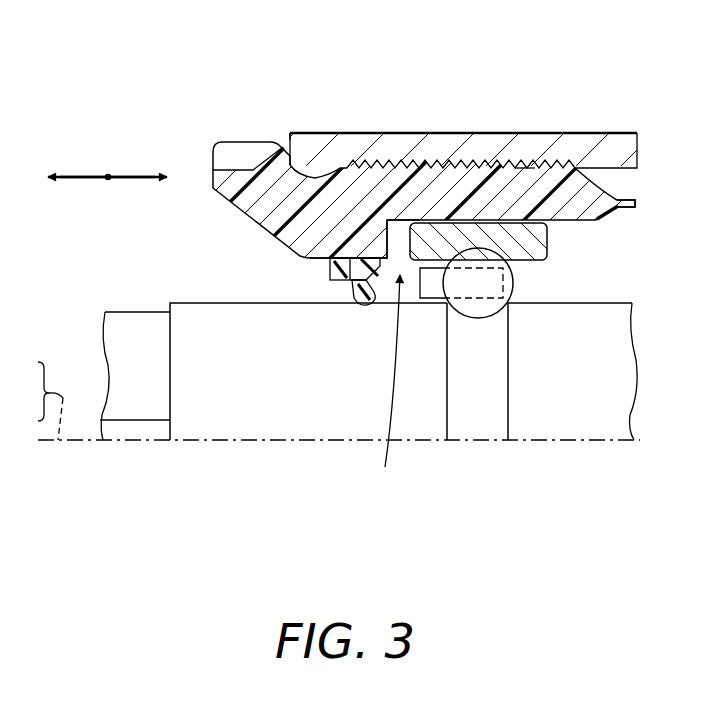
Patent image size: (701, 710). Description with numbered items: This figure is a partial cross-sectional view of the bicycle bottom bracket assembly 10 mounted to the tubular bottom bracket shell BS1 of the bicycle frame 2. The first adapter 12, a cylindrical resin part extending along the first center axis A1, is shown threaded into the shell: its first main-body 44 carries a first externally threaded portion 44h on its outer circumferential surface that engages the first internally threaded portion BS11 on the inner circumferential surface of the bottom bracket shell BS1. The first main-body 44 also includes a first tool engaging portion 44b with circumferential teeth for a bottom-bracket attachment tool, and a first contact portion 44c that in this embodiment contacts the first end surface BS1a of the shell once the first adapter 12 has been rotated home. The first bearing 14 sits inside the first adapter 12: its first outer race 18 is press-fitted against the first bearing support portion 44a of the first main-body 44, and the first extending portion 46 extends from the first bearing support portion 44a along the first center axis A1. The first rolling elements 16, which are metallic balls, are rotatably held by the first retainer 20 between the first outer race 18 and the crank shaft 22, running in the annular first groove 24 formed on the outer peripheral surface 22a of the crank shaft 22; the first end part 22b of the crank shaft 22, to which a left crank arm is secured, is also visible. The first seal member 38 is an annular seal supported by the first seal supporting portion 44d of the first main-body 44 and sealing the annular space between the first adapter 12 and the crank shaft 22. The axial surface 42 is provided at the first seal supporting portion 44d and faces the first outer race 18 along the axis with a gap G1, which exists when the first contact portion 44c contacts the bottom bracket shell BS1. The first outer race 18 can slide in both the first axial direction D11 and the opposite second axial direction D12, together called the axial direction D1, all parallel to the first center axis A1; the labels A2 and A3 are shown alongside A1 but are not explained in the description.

The bicycle bottom bracket assembly 10 is at (193, 119).
The first adapter 12 is at (622, 95).
The bicycle frame 2 is at (320, 124).
The first main-body 44 is at (588, 179).
The first bearing support portion 44a is at (430, 137).
The first tool engaging portion 44b is at (248, 140).
The first contact portion 44c is at (275, 138).
The first seal supporting portion 44d is at (320, 240).
The first externally threaded portion 44h is at (495, 150).
The first extending portion 46 is at (620, 200).
The axial surface 42 is at (407, 218).
The first seal member 38 is at (310, 278).
The first bearing 14 is at (641, 222).
The first outer race 18 is at (556, 240).
The first rolling elements 16 is at (507, 282).
The first retainer 20 is at (433, 293).
The crank shaft 22 is at (154, 282).
The outer peripheral surface 22a is at (202, 310).
The first end part 22b is at (120, 320).
The first groove 24 is at (503, 420).
The gap G1 is at (385, 384).
The axial direction D1 is at (157, 124).
The first axial direction D11 is at (70, 176).
The second axial direction D12 is at (147, 176).
The first center axis A1 is at (29, 370).
The second axis A2 is at (39, 408).
The third axis A3 is at (29, 414).
The bottom bracket shell BS1 is at (363, 140).
The first end surface BS1a is at (278, 133).
The first internally threaded portion BS11 is at (525, 150).